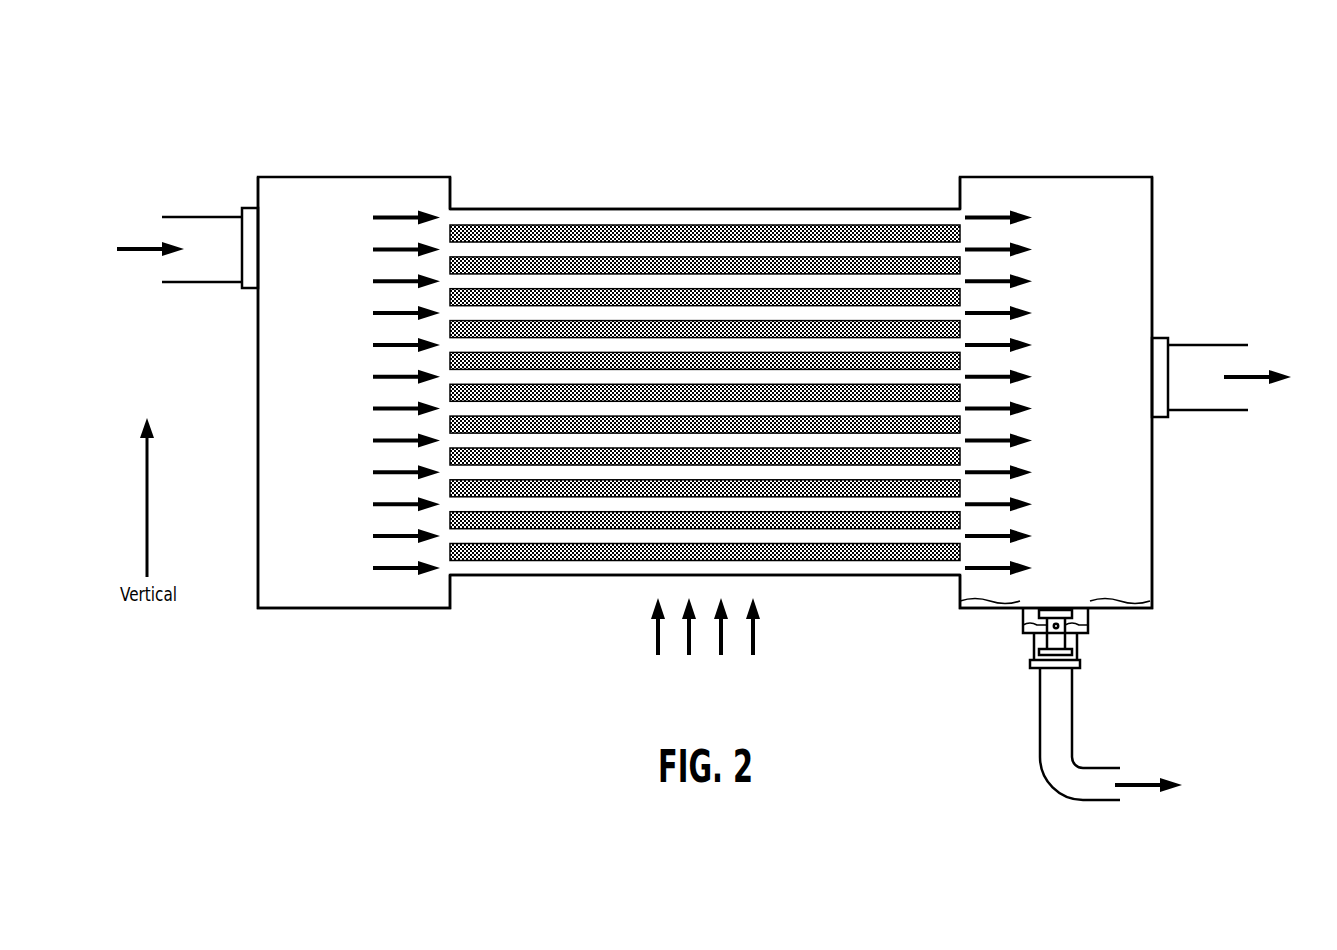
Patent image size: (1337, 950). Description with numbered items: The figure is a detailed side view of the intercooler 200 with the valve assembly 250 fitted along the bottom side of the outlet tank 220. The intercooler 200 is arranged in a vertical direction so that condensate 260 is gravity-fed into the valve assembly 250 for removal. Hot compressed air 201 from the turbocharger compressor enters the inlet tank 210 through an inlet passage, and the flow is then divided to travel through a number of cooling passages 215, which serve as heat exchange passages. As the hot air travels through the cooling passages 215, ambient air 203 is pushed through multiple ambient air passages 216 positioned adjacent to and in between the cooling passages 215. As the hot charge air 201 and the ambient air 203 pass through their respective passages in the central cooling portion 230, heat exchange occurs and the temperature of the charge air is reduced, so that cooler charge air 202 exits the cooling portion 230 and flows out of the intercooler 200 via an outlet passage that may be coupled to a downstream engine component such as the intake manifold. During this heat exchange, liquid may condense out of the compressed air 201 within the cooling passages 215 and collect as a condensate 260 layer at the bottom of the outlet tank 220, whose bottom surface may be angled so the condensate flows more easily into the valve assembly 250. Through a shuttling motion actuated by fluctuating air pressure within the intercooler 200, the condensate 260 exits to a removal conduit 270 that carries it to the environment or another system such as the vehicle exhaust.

The intercooler 200 is at (882, 80).
The hot compressed air 201 is at (261, 393).
The cooler charge air 202 is at (1150, 393).
The ambient air 203 is at (705, 642).
The inlet tank 210 is at (338, 167).
The cooling passages 215 is at (736, 344).
The ambient air passages 216 is at (626, 428).
The outlet tank 220 is at (1103, 165).
The central cooling portion 230 is at (842, 199).
The valve assembly 250 is at (1106, 638).
The condensate 260 is at (982, 610).
The removal conduit 270 is at (1019, 708).